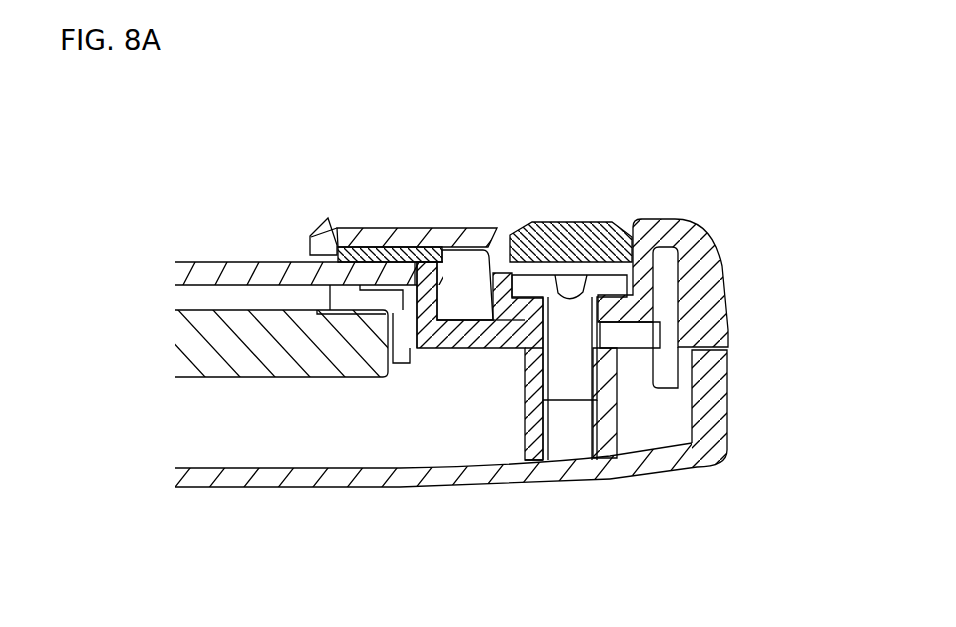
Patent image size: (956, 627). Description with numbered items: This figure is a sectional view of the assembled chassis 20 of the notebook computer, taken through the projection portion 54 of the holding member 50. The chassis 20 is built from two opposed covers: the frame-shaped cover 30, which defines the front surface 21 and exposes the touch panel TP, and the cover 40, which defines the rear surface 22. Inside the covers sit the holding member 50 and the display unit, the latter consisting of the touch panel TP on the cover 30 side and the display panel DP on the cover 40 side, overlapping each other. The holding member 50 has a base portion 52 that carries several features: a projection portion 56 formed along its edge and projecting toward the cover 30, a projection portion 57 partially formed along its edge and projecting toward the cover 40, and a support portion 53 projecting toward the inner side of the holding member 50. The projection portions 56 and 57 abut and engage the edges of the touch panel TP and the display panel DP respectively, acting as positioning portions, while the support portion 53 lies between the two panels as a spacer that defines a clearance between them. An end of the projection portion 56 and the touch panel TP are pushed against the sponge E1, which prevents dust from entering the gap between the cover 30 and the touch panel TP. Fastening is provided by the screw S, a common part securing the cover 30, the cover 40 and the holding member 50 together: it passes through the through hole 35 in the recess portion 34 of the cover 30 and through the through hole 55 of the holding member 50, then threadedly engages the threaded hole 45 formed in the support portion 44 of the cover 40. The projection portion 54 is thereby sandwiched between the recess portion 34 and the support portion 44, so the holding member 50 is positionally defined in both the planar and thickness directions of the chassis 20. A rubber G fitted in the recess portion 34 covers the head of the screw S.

The chassis 20 is at (712, 312).
The front surface 21 is at (372, 228).
The rear surface 22 is at (252, 487).
The cover 30 is at (736, 294).
The recess portion 34 is at (509, 240).
The through hole 35 is at (551, 303).
The cover 40 is at (738, 412).
The support portion 44 is at (540, 430).
The threaded hole 45 is at (586, 425).
The holding member 50 is at (436, 418).
The base portion 52 is at (418, 307).
The support portion 53 is at (318, 237).
The projection portion 54 is at (500, 330).
The through hole 55 is at (590, 330).
The projection portion 56 is at (438, 269).
The projection portion 57 is at (372, 355).
The touch panel TP is at (264, 251).
The display panel DP is at (238, 390).
The sponge E1 is at (417, 247).
The rubber G is at (549, 222).
The screw S is at (575, 320).